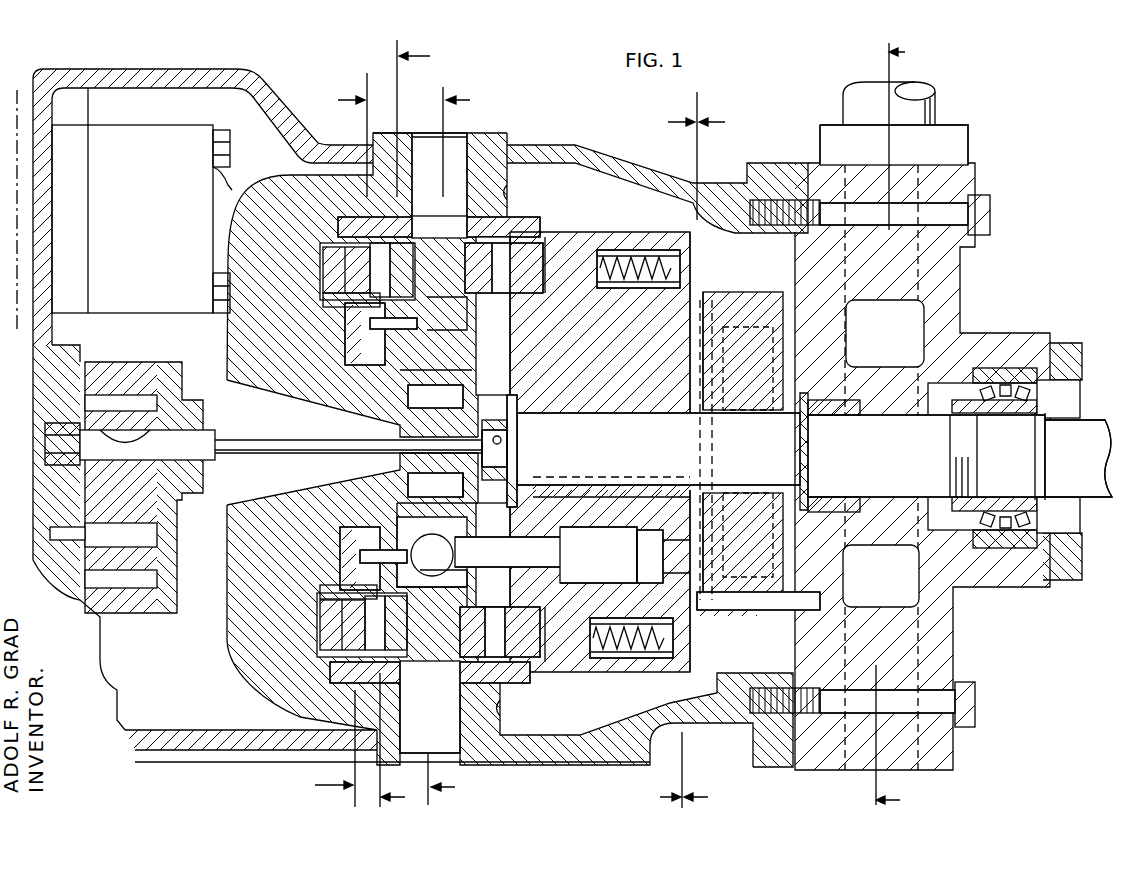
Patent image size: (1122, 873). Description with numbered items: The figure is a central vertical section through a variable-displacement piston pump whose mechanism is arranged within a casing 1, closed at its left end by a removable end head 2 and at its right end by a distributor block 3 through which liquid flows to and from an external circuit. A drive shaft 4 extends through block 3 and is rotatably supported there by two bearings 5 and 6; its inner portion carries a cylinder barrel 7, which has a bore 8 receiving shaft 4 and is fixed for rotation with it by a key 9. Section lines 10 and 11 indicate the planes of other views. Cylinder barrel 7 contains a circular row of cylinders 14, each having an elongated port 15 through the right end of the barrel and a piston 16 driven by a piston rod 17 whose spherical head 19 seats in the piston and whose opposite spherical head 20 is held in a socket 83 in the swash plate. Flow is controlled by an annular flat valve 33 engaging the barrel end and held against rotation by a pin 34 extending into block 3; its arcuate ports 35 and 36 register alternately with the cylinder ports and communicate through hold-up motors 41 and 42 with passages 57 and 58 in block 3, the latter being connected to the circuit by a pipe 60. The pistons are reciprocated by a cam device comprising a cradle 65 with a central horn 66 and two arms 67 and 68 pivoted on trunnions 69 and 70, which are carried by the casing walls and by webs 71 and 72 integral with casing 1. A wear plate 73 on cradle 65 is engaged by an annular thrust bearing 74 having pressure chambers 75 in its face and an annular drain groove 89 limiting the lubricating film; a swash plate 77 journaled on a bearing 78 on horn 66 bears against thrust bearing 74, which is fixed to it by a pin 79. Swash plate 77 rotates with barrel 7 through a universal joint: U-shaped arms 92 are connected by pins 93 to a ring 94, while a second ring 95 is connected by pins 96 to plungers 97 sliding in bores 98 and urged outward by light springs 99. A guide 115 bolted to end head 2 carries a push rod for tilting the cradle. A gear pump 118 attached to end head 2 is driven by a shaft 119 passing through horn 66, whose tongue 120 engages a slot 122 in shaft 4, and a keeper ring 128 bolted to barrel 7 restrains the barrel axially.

The casing 1 is at (560, 145).
The end head 2 is at (77, 72).
The distributor block 3 is at (950, 281).
The drive shaft 4 is at (1080, 470).
The bearing 5 is at (1023, 392).
The bearing 6 is at (842, 420).
The cylinder barrel 7 is at (602, 359).
The bore 8 is at (642, 416).
The key 9 is at (628, 477).
The section line 10 is at (420, 425).
The section line 11 is at (330, 440).
The cylinder 14 is at (637, 540).
The port 15 is at (678, 556).
The piston 16 is at (600, 566).
The piston rod 17 is at (504, 355).
The spherical head 19 is at (536, 556).
The spherical head 20 is at (453, 553).
The valve 33 is at (765, 302).
The pin 34 is at (773, 610).
The arcuate port 35 is at (700, 317).
The arcuate port 36 is at (697, 600).
The hold-up motor 41 is at (770, 412).
The hold-up motor 42 is at (770, 492).
The passage 57 is at (903, 343).
The passage 58 is at (900, 593).
The pipe 60 is at (930, 112).
The cradle 65 is at (255, 665).
The horn 66 is at (352, 400).
The arm 67 is at (502, 711).
The arm 68 is at (510, 192).
The trunnion 69 is at (440, 728).
The trunnion 70 is at (451, 181).
The web 71 is at (470, 676).
The web 72 is at (472, 232).
The wear plate 73 is at (345, 530).
The thrust bearing 74 is at (367, 520).
The pressure chamber 75 is at (320, 550).
The swash plate 77 is at (465, 320).
The bearing 78 is at (456, 403).
The pin 79 is at (400, 324).
The socket 83 is at (415, 600).
The drain groove 89 is at (350, 563).
The U-shaped arm 92 is at (323, 300).
The pin 93 is at (345, 270).
The ring 94 is at (340, 258).
The ring 95 is at (465, 258).
The pin 96 is at (500, 270).
The plunger 97 is at (585, 253).
The bore 98 is at (668, 258).
The spring 99 is at (640, 256).
The guide 115 is at (237, 190).
The gear pump 118 is at (138, 345).
The shaft 119 is at (273, 440).
The tongue 120 is at (500, 450).
The slot 122 is at (501, 441).
The keeper ring 128 is at (520, 478).